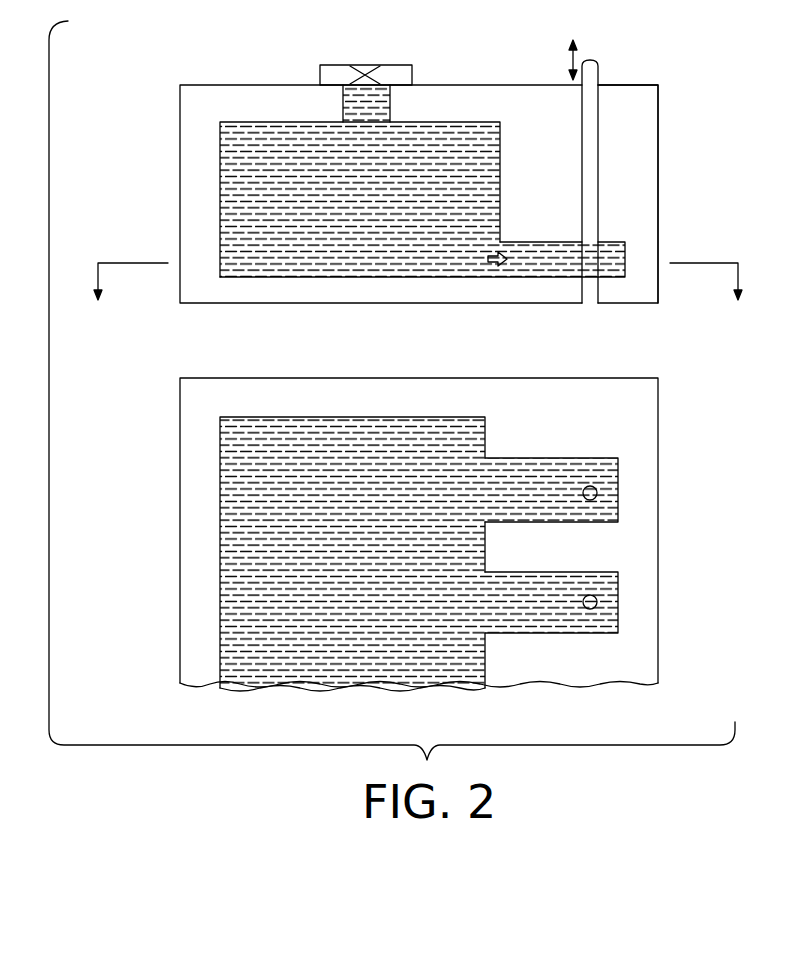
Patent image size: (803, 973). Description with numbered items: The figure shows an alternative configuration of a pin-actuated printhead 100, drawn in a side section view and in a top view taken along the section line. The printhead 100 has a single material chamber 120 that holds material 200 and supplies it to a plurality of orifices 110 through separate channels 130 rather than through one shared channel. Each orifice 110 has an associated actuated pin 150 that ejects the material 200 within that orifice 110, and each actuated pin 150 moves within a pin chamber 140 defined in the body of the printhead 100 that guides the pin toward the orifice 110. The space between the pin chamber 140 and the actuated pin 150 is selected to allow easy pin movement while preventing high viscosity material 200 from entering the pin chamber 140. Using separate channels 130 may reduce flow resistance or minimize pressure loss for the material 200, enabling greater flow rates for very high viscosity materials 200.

The printhead 100 is at (150, 70).
The orifice 110 is at (597, 494).
The material chamber 120 is at (260, 222).
The channel 130 is at (545, 242).
The pin chamber 140 is at (612, 77).
The actuated pin 150 is at (593, 78).
The material 200 is at (422, 386).